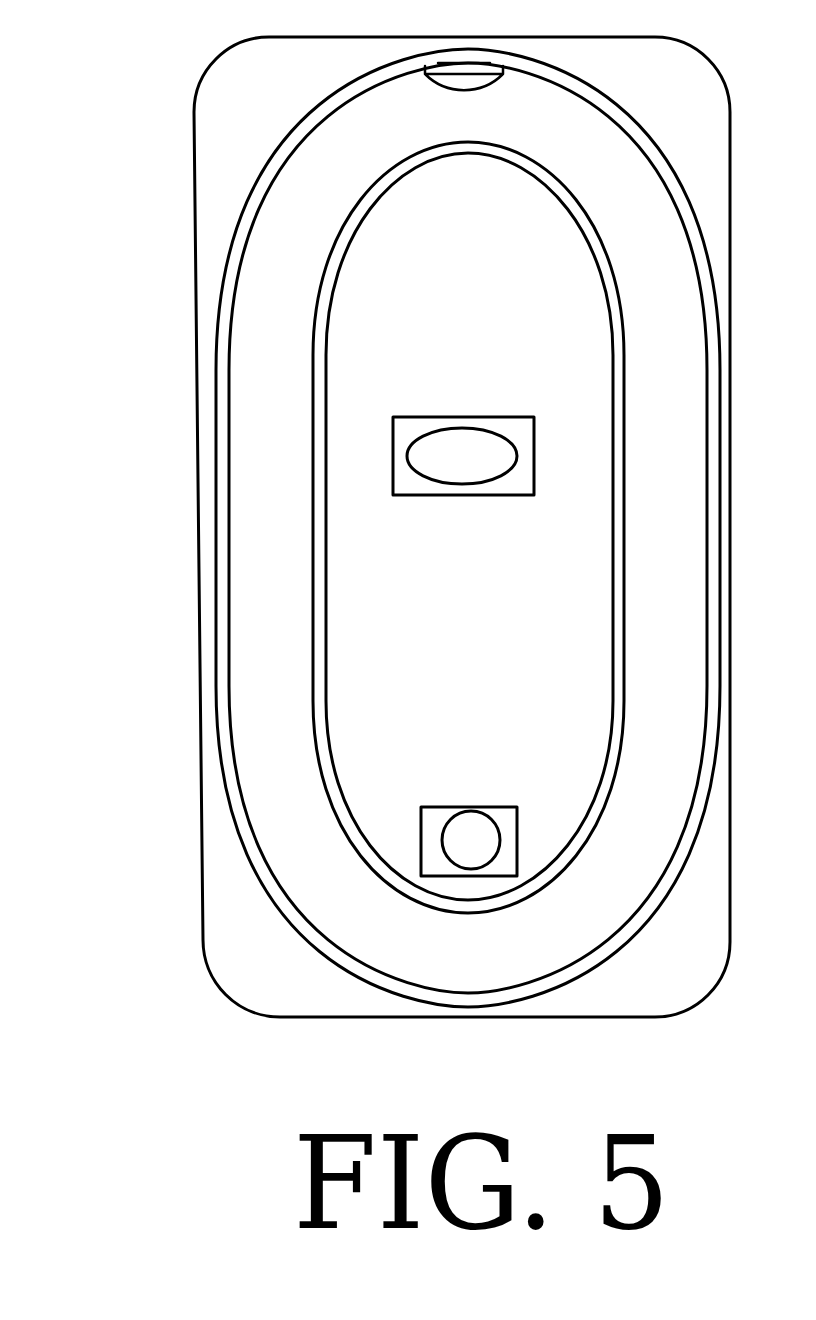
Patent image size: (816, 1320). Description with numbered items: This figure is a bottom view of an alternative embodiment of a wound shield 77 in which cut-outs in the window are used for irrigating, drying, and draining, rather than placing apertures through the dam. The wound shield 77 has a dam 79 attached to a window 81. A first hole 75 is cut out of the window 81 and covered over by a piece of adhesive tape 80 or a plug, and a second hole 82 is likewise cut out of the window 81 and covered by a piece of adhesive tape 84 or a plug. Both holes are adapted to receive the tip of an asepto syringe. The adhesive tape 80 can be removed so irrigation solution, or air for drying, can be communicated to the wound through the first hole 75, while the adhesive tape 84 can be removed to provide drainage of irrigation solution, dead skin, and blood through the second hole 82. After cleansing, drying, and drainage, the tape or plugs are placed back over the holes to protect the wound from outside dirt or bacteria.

The wound shield 77 is at (154, 88).
The window 81 is at (281, 112).
The dam 79 is at (362, 178).
The adhesive tape 80 is at (425, 497).
The first hole 75 is at (462, 455).
The adhesive tape 84 is at (503, 820).
The second hole 82 is at (462, 832).